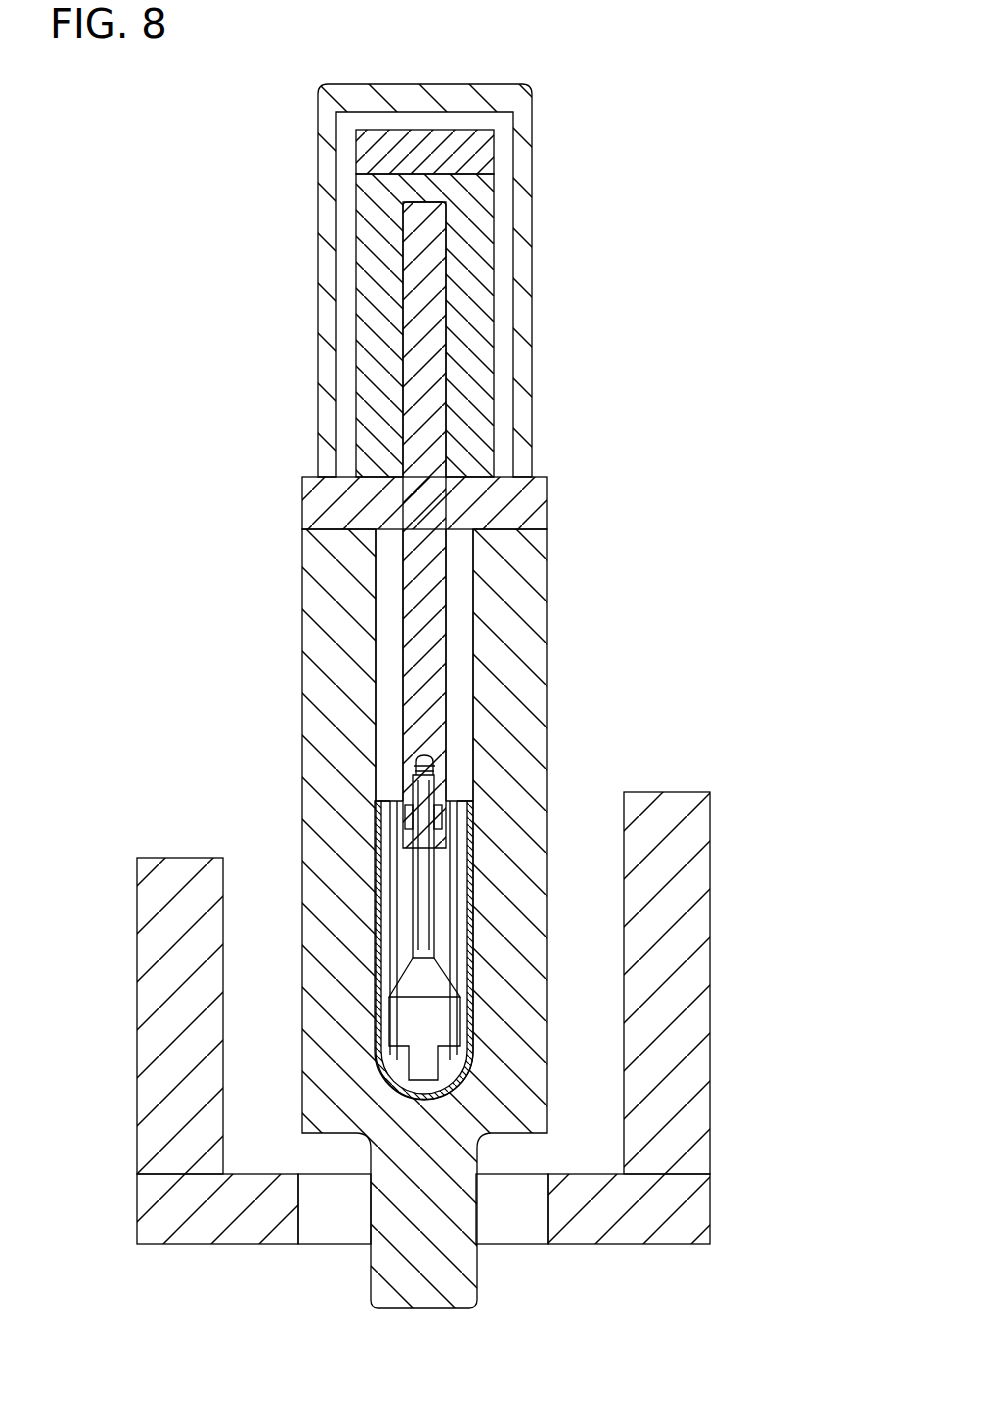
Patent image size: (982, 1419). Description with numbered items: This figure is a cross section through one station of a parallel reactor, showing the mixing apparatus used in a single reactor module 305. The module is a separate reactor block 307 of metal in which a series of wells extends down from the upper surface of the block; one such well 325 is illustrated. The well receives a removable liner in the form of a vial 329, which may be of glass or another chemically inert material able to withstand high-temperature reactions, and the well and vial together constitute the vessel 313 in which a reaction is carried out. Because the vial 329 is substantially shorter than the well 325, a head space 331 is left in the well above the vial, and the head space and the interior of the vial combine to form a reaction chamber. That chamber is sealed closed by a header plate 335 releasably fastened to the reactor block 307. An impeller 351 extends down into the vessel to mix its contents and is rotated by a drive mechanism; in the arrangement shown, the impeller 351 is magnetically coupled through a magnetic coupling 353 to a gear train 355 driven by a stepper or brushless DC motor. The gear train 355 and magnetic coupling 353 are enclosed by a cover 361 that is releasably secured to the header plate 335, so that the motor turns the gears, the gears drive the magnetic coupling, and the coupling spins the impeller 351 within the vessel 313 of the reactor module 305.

The reactor module 305 is at (648, 315).
The reactor block 307 is at (547, 592).
The vessel 313 is at (476, 817).
The well 325 is at (378, 582).
The vial 329 is at (388, 800).
The head space 331 is at (460, 660).
The header plate 335 is at (547, 505).
The impeller 351 is at (410, 854).
The magnetic coupling 353 is at (498, 423).
The gear train 355 is at (494, 155).
The cover 361 is at (318, 290).